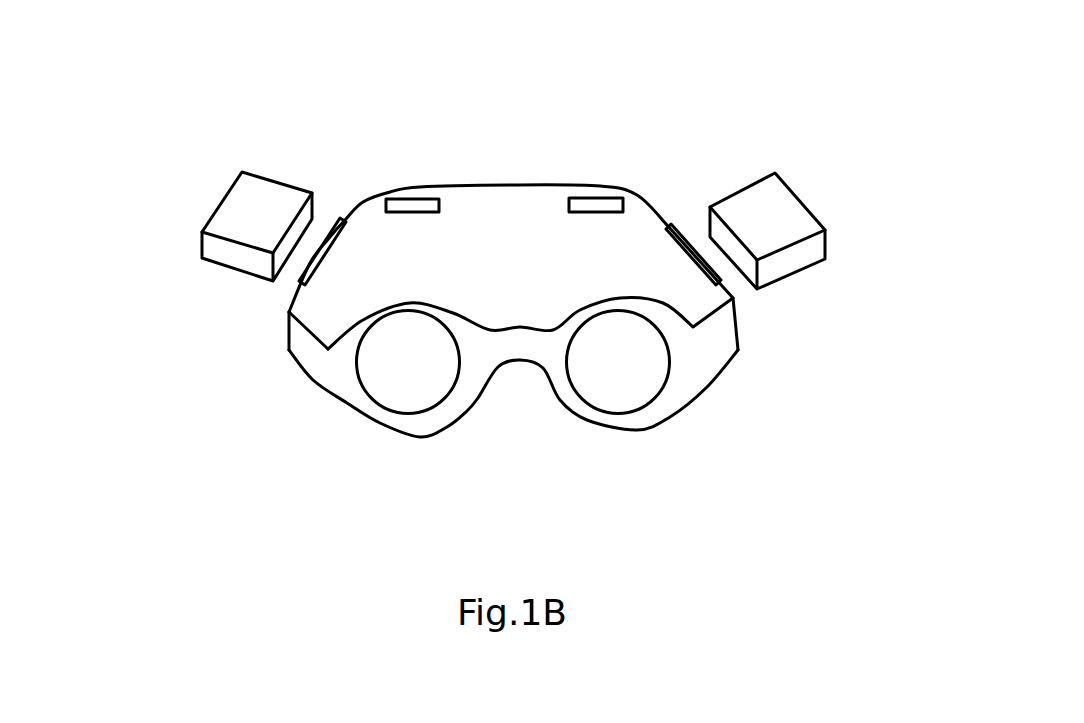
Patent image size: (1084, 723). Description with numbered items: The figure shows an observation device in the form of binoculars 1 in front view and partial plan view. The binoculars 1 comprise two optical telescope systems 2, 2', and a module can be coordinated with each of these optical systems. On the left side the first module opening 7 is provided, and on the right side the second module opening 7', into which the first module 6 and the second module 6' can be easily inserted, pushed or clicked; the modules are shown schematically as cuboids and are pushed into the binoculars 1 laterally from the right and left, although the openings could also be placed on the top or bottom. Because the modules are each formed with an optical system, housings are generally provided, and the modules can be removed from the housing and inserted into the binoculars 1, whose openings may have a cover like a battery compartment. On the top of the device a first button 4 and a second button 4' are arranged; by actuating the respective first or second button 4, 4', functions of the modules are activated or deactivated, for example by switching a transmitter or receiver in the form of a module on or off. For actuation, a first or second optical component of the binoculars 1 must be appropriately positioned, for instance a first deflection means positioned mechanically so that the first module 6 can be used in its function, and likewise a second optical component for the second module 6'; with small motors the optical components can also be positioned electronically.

The binoculars 1 is at (200, 110).
The optical telescope system 2 is at (339, 425).
The optical telescope system 2' is at (691, 421).
The first button 4 is at (414, 134).
The second button 4' is at (590, 134).
The first module 6 is at (196, 263).
The second module 6' is at (822, 265).
The first module opening 7 is at (322, 177).
The second module opening 7' is at (696, 179).